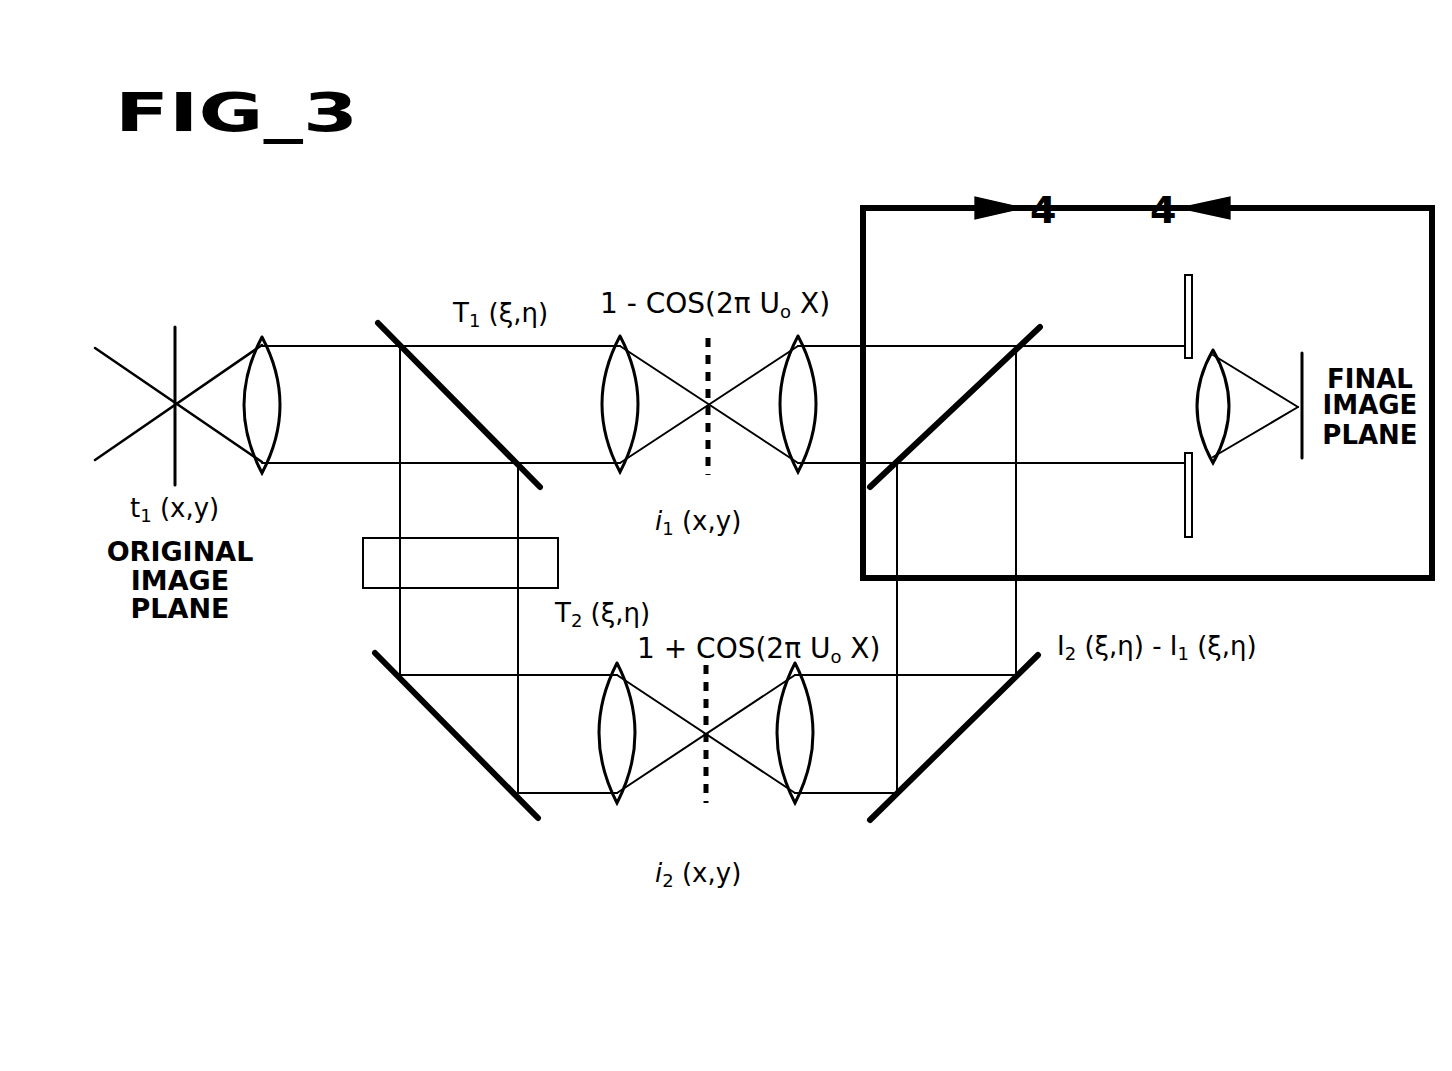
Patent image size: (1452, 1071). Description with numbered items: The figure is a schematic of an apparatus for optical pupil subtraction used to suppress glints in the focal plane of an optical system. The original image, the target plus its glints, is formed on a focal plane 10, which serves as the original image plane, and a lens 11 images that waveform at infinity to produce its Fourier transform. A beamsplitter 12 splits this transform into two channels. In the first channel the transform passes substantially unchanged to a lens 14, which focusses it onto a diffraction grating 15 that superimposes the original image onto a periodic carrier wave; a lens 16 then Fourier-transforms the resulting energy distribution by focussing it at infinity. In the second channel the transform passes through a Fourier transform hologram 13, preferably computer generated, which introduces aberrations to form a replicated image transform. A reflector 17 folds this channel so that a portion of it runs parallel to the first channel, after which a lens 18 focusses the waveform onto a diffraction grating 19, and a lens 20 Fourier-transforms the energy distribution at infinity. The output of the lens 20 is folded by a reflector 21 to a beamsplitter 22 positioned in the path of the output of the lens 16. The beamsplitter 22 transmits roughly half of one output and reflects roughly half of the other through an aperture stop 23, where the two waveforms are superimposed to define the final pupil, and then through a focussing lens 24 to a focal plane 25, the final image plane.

The focal plane 10 is at (174, 332).
The lens 11 is at (282, 397).
The beamsplitter 12 is at (380, 322).
The Fourier transform hologram 13 is at (363, 558).
The lens 14 is at (602, 430).
The diffraction grating 15 is at (705, 461).
The lens 16 is at (780, 450).
The reflector 17 is at (420, 703).
The lens 18 is at (604, 710).
The diffraction grating 19 is at (704, 797).
The lens 20 is at (802, 760).
The reflector 21 is at (960, 736).
The beamsplitter 22 is at (1042, 326).
The aperture stop 23 is at (1193, 290).
The focussing lens 24 is at (1214, 355).
The focal plane 25 is at (1305, 458).